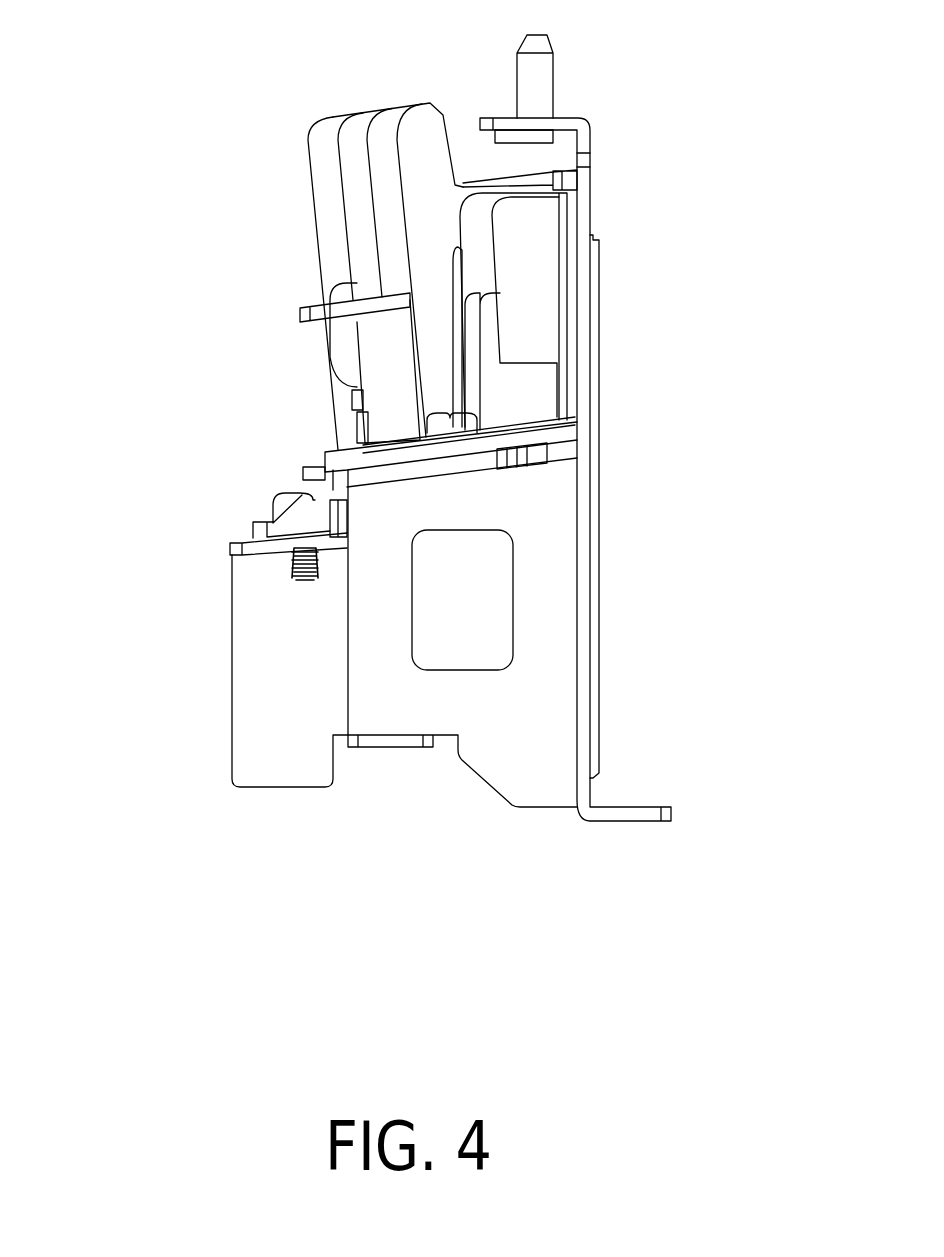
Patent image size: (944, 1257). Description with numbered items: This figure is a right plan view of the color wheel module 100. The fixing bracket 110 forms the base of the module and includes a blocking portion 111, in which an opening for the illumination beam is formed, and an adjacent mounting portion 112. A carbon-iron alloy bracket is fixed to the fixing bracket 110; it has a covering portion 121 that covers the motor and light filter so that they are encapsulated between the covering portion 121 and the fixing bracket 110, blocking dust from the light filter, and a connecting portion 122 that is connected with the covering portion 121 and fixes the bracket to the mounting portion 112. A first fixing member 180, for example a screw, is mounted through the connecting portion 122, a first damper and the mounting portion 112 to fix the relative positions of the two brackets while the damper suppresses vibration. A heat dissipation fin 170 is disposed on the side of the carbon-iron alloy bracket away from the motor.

The color wheel module 100 is at (96, 44).
The fixing bracket 110 is at (590, 168).
The blocking portion 111 is at (583, 198).
The mounting portion 112 is at (243, 547).
The covering portion 121 is at (357, 352).
The connecting portion 122 is at (258, 522).
The heat dissipation fin 170 is at (328, 180).
The first fixing member 180 is at (282, 495).